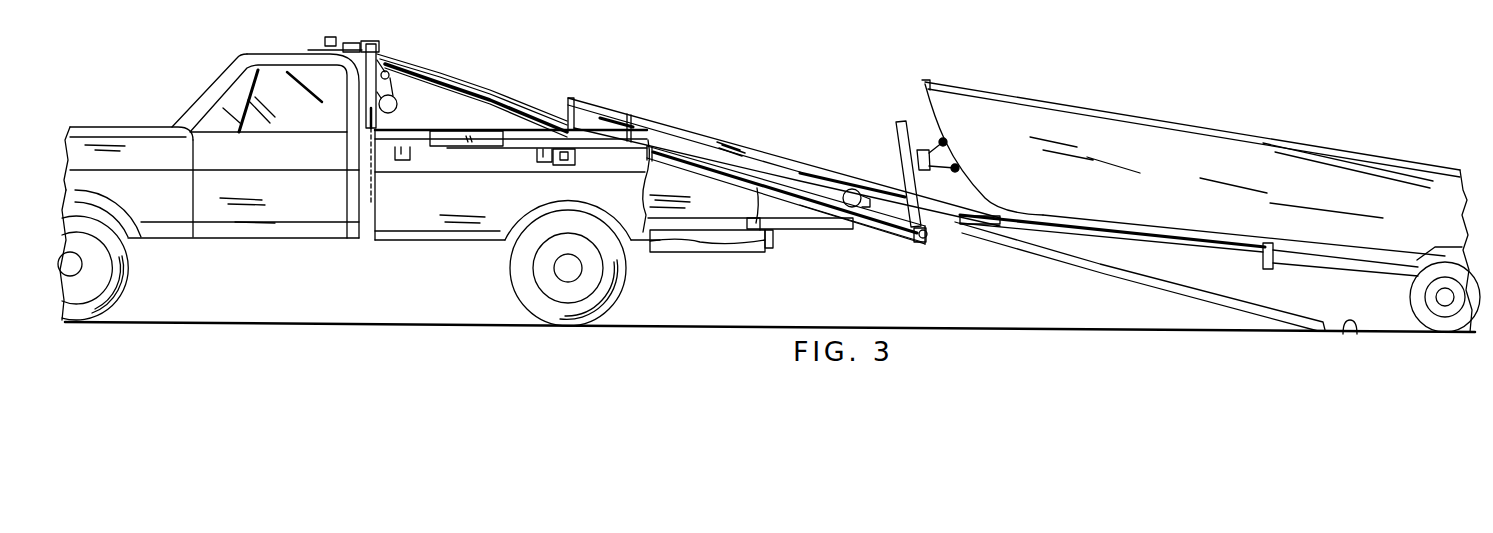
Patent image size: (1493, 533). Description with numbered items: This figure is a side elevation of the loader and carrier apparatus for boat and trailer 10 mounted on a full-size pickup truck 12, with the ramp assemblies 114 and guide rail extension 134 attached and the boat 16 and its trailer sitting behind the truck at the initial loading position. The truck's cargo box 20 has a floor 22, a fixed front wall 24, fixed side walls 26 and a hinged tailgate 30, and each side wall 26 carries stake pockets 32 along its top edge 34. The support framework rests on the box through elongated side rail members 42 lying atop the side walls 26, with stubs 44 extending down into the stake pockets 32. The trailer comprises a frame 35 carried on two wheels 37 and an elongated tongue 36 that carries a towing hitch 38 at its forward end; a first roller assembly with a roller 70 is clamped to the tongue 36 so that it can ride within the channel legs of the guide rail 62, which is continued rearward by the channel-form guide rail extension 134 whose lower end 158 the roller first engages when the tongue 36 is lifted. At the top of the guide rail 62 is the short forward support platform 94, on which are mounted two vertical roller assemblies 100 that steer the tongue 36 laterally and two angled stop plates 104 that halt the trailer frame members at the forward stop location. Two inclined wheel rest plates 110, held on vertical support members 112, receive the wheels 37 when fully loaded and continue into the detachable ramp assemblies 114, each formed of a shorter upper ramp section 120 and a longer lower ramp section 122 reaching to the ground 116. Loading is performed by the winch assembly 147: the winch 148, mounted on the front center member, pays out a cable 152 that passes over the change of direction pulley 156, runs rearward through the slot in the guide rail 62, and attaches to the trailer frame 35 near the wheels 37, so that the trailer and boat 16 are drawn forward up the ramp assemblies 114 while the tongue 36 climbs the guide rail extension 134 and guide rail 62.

The loader and carrier apparatus for boat and trailer 10 is at (537, 61).
The pickup truck 12 is at (131, 122).
The boat 16 is at (1200, 128).
The cargo box 20 is at (676, 230).
The floor 22 is at (697, 227).
The front wall 24 is at (378, 176).
The side wall 26 is at (435, 140).
The tailgate 30 is at (820, 230).
The stake pocket 32 is at (410, 158).
The top edge 34 is at (500, 140).
The frame 35 is at (1160, 232).
The tongue 36 is at (978, 203).
The wheel 37 is at (1421, 300).
The towing hitch 38 is at (853, 191).
The side rail member 42 is at (368, 138).
The stub 44 is at (578, 163).
The guide rail 62 is at (504, 97).
The roller 70 is at (920, 231).
The forward support platform 94 is at (317, 50).
The vertical roller assembly 100 is at (332, 37).
The stop plate 104 is at (357, 43).
The wheel rest plate 110 is at (606, 106).
The vertical support member 112 is at (567, 102).
The ramp assembly 114 is at (1068, 252).
The ground 116 is at (1352, 334).
The upper ramp section 120 is at (763, 165).
The lower ramp section 122 is at (1165, 283).
The guide rail extension 134 is at (878, 228).
The winch assembly 147 is at (377, 100).
The winch 148 is at (398, 110).
The cable 152 is at (1176, 253).
The change of direction pulley 156 is at (398, 66).
The lower end 158 is at (919, 244).